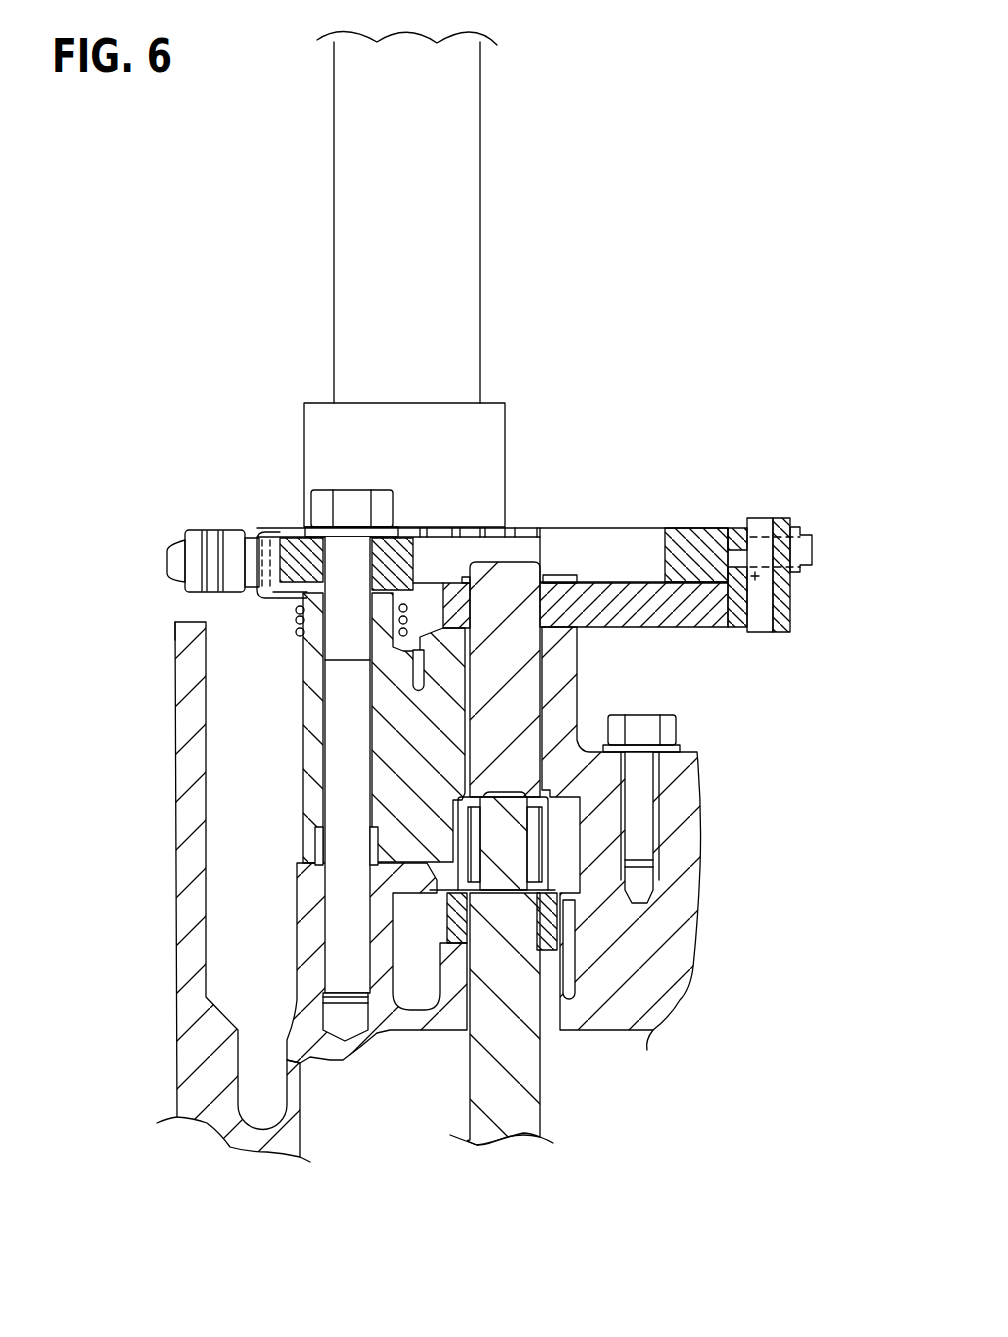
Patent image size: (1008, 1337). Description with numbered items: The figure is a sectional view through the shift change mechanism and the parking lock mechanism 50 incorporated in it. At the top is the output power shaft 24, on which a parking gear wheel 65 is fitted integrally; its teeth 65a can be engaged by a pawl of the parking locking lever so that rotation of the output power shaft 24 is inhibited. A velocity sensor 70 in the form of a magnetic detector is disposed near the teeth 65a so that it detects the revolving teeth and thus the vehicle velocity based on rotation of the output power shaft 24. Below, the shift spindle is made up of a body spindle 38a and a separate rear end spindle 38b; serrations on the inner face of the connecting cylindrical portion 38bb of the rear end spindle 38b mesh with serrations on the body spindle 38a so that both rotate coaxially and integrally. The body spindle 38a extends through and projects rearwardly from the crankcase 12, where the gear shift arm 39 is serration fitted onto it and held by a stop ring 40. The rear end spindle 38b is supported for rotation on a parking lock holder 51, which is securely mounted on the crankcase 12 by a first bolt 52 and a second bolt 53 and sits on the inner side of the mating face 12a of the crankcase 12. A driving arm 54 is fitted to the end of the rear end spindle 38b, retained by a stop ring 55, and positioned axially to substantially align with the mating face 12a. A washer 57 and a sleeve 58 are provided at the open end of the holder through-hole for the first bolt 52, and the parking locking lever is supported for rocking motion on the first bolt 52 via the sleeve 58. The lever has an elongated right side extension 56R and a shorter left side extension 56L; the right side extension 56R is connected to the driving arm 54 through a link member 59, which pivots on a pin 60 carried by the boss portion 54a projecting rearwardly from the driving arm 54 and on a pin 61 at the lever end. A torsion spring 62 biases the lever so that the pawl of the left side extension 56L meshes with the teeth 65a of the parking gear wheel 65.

The output power shaft 24 is at (334, 188).
The parking lock mechanism 50 is at (598, 366).
The parking gear wheel 65 is at (503, 528).
The teeth 65a is at (516, 528).
The rear end spindle 38b is at (535, 562).
The body spindle 38a is at (542, 1093).
The left side extension 56L is at (263, 530).
The right side extension 56R is at (597, 530).
The sleeve 58 is at (283, 530).
The velocity sensor 70 is at (168, 553).
The washer 57 is at (257, 596).
The mating face 12a is at (173, 624).
The crankcase 12 is at (205, 900).
The torsion spring 62 is at (296, 621).
The parking lock holder 51 is at (303, 730).
The first bolt 52 is at (350, 783).
The stop ring 55 is at (560, 580).
The driving arm 54 is at (633, 627).
The second bolt 53 is at (648, 712).
The pin 60 is at (762, 633).
The pin 61 is at (780, 518).
The link member 59 is at (803, 527).
The boss portion 54a is at (793, 580).
The connecting cylindrical portion 38bb is at (548, 833).
The stop ring 40 is at (545, 885).
The gear shift arm 39 is at (563, 913).